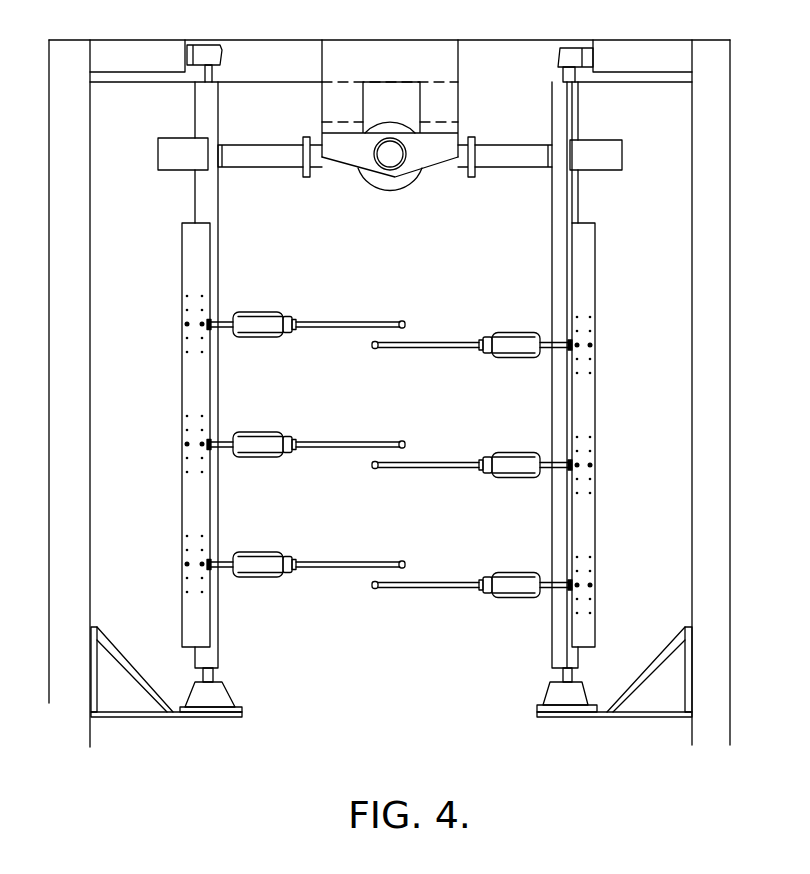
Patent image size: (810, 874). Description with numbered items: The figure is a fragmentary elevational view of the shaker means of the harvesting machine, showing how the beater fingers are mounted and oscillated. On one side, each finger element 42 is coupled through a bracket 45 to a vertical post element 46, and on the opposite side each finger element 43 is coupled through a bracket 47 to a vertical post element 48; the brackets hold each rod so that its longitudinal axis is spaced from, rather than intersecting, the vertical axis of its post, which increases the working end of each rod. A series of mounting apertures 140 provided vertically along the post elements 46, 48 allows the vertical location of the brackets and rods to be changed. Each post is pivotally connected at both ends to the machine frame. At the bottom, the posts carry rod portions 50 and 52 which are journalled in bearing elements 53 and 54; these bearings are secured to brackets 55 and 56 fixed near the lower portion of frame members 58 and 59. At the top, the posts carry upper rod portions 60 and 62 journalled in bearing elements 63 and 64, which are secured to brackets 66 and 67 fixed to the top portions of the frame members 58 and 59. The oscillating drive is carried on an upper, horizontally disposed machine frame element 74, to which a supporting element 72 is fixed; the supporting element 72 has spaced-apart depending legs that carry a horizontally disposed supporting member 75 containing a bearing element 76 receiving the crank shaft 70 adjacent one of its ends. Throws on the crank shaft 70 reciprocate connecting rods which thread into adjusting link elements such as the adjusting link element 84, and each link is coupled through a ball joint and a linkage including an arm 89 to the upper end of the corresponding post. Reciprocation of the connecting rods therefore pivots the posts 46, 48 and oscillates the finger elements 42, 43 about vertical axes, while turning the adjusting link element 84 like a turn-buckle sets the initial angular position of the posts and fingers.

The finger element 42 is at (355, 320).
The finger element 43 is at (435, 350).
The bracket 45 is at (264, 307).
The vertical post element 46 is at (186, 110).
The bracket 47 is at (508, 327).
The vertical post element 48 is at (588, 115).
The rod portion 50 is at (215, 673).
The rod portion 52 is at (562, 673).
The bearing element 53 is at (217, 695).
The bearing element 54 is at (567, 693).
The bracket 55 is at (152, 717).
The bracket 56 is at (637, 717).
The frame member 58 is at (75, 493).
The frame member 59 is at (707, 515).
The upper rod portion 60 is at (212, 75).
The upper rod portion 62 is at (547, 72).
The bearing element 63 is at (207, 45).
The bearing element 64 is at (572, 48).
The bracket 66 is at (140, 56).
The bracket 67 is at (655, 57).
The crank shaft 70 is at (390, 157).
The supporting element 72 is at (380, 62).
The machine frame element 74 is at (268, 56).
The supporting member 75 is at (345, 148).
The bearing element 76 is at (409, 166).
The adjusting link element 84 is at (261, 168).
The arm 89 is at (165, 157).
The mounting apertures 140 is at (200, 338).